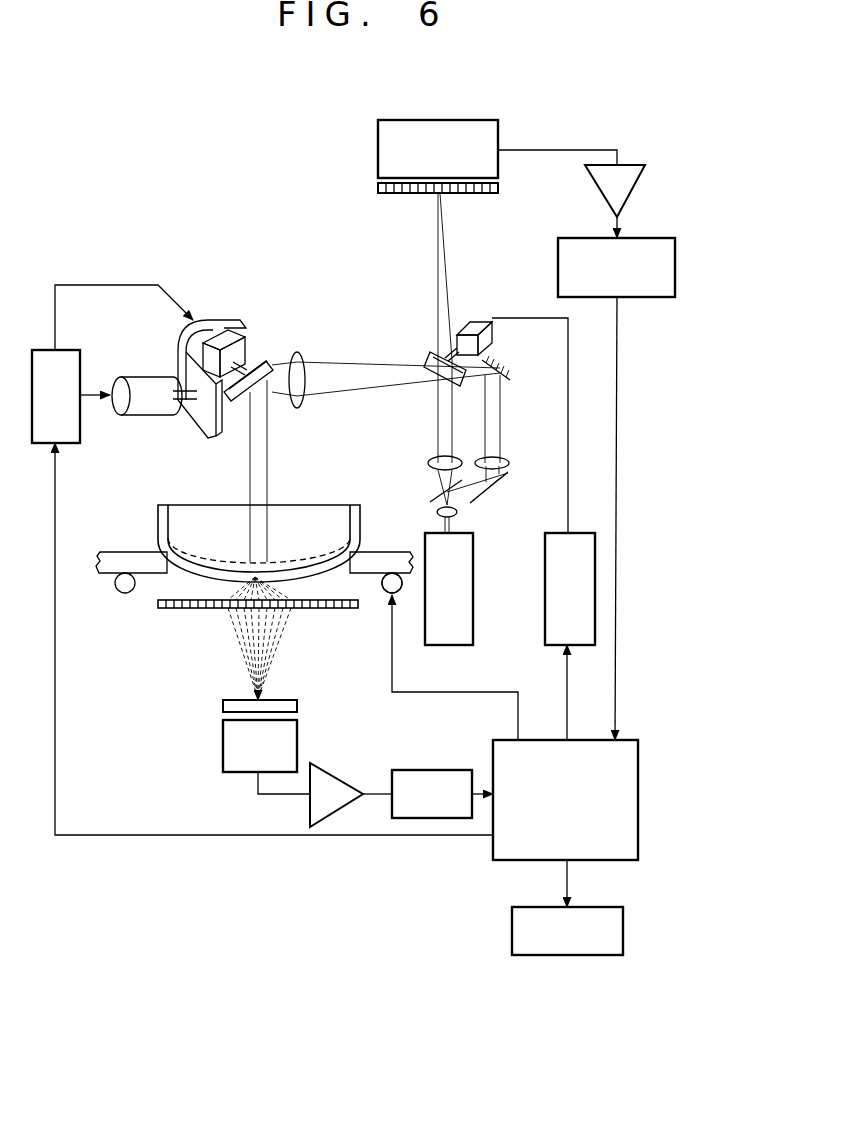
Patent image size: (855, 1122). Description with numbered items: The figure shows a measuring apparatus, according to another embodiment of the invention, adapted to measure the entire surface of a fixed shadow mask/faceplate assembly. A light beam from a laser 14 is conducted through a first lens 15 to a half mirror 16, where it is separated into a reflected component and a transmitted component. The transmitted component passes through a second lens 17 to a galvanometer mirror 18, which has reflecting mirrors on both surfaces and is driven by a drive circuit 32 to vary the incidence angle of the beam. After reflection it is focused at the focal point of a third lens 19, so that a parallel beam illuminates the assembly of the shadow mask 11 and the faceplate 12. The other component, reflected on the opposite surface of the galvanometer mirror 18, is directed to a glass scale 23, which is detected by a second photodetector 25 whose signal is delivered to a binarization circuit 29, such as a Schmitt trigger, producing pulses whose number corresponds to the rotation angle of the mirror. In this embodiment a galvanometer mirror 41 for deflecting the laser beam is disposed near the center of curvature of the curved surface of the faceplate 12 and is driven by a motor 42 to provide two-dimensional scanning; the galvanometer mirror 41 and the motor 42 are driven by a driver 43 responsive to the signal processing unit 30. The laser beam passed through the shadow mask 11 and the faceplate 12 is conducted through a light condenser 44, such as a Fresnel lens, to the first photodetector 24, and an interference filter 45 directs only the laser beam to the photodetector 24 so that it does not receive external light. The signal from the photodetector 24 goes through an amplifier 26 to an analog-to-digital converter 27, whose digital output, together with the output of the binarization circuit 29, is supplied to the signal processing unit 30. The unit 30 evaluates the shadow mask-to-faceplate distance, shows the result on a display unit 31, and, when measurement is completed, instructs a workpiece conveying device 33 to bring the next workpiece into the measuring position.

The shadow mask 11 is at (344, 523).
The faceplate 12 is at (360, 528).
The laser 14 is at (473, 620).
The first lens 15 is at (456, 514).
The half mirror 16 is at (430, 497).
The second lens 17 is at (428, 463).
The galvanometer mirror 18 is at (455, 386).
The third lens 19 is at (302, 398).
The glass scale 23 is at (487, 194).
The first photodetector 24 is at (223, 745).
The second photodetector 25 is at (476, 120).
The amplifier 26 is at (350, 778).
The analog-to-digital converter 27 is at (433, 770).
The binarization circuit 29 is at (558, 266).
The signal processing unit 30 is at (641, 800).
The display unit 31 is at (567, 958).
The drive circuit 32 is at (545, 578).
The workpiece conveying device 33 is at (388, 595).
The galvanometer mirror 41 is at (262, 364).
The motor 42 is at (147, 417).
The driver 43 is at (40, 446).
The light condenser 44 is at (158, 608).
The interference filter 45 is at (223, 706).